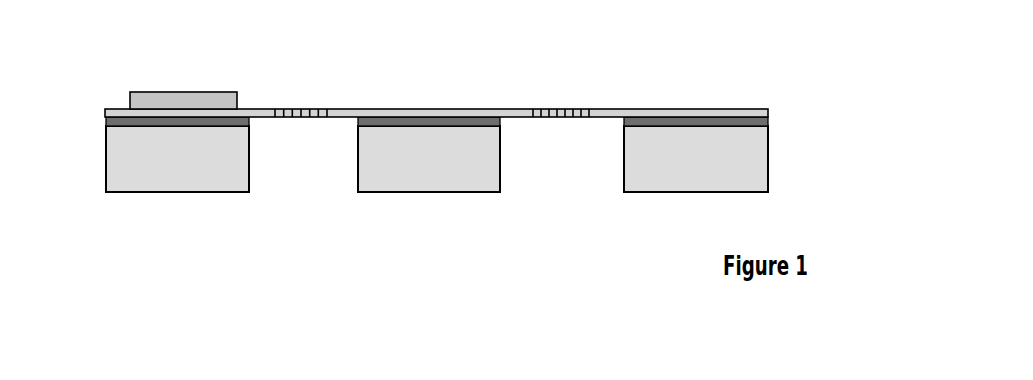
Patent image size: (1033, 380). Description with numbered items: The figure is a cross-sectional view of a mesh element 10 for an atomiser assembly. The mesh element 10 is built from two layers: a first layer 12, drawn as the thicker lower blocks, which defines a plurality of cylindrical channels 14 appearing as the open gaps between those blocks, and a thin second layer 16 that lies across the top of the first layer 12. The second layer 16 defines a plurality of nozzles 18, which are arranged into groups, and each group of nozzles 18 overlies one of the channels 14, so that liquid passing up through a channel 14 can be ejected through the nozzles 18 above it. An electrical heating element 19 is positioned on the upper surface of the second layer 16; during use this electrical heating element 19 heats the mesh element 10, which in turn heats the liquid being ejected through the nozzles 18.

The mesh element 10 is at (775, 83).
The first layer 12 is at (132, 185).
The cylindrical channels 14 is at (570, 177).
The second layer 16 is at (662, 112).
The nozzles 18 is at (270, 95).
The electrical heating element 19 is at (155, 90).